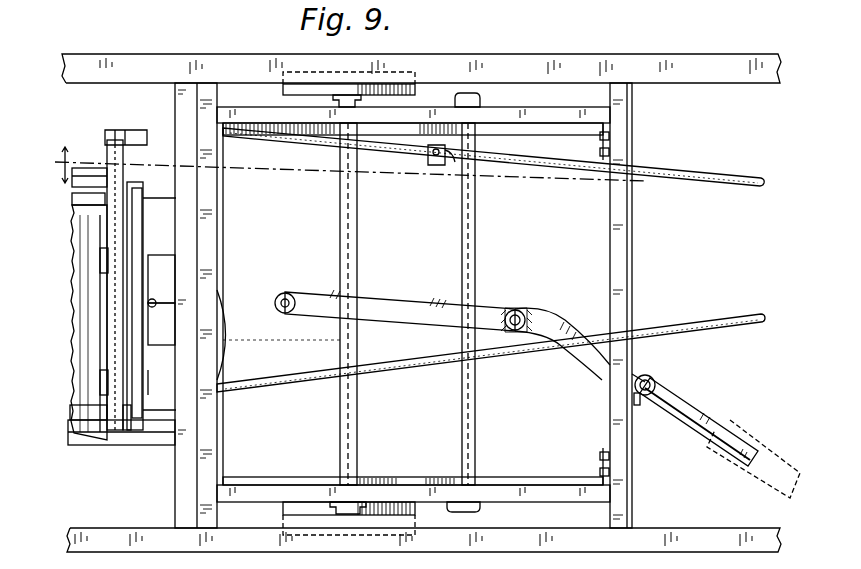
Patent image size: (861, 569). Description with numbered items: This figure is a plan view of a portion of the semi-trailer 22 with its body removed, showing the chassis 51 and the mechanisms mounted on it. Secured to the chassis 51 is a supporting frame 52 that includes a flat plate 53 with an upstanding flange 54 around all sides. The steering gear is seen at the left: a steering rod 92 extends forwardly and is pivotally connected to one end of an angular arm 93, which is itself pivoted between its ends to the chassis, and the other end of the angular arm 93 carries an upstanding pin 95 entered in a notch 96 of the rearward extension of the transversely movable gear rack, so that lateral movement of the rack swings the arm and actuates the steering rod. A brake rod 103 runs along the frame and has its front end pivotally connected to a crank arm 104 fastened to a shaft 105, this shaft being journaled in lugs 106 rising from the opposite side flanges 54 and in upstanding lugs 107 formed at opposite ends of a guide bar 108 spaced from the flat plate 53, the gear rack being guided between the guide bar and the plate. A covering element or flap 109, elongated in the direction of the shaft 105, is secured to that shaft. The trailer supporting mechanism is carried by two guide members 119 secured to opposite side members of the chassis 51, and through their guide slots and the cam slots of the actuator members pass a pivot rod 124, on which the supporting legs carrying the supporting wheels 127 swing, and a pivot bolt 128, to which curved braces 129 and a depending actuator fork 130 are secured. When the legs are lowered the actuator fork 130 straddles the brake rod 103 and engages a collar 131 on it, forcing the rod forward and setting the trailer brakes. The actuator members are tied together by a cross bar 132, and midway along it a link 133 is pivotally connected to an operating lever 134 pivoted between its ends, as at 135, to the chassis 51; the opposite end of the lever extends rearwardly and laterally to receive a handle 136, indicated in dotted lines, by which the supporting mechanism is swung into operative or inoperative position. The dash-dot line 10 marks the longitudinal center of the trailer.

The center line of machine 10 is at (45, 170).
The semi-trailer 22 is at (421, 57).
The chassis of the semi-trailer 51 is at (167, 74).
The supporting frame 52 is at (142, 430).
The flat plate 53 is at (72, 412).
The upstanding flange 54 is at (78, 197).
The steering rod 92 is at (540, 355).
The angular arm 93 is at (226, 352).
The upstanding pin or stud 95 is at (154, 300).
The notch 96 is at (172, 305).
The brake rod 103 is at (545, 172).
The crank arm 104 is at (105, 137).
The shaft 105 is at (128, 140).
The lugs 106 is at (128, 186).
The upstanding lugs 107 is at (145, 199).
The guide bar 108 is at (130, 226).
The covering element or flap 109 is at (86, 324).
The guide members 119 is at (527, 115).
The pivot rod 124 is at (357, 399).
The supporting wheels 127 is at (290, 86).
The pivot bolt 128 is at (475, 414).
The curved braces 129 is at (430, 128).
The depending actuator fork 130 is at (452, 160).
The collar 131 is at (440, 165).
The cross bar 132 is at (290, 347).
The link 133 is at (405, 302).
The operating lever 134 is at (600, 362).
The pivot of operating lever 135 is at (657, 380).
The handle 136 is at (770, 466).